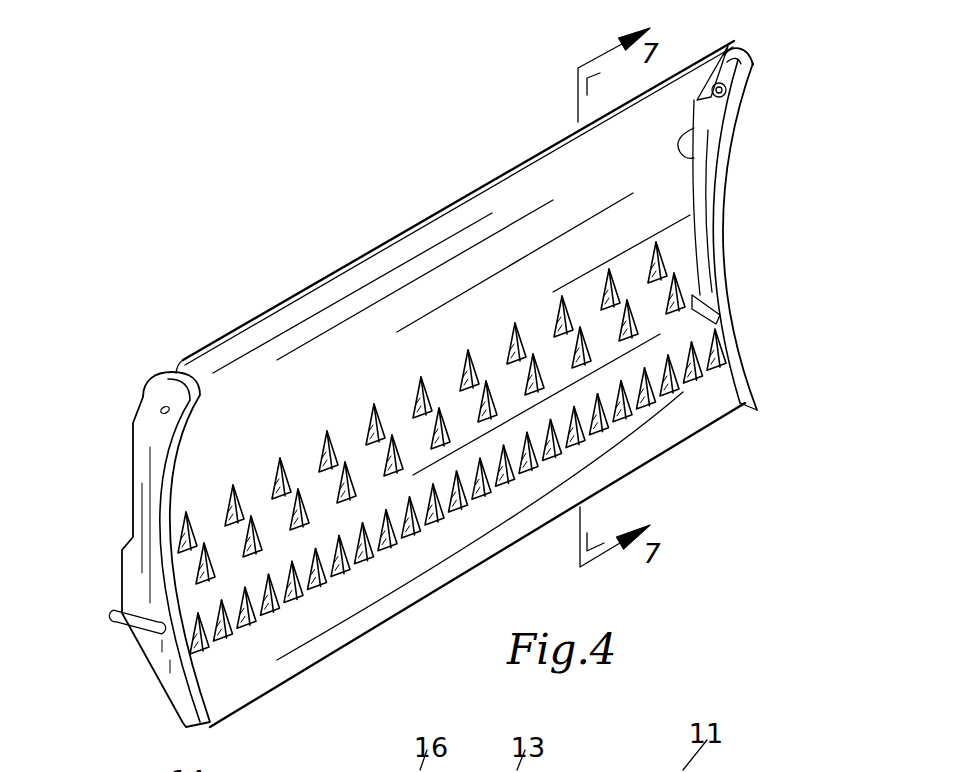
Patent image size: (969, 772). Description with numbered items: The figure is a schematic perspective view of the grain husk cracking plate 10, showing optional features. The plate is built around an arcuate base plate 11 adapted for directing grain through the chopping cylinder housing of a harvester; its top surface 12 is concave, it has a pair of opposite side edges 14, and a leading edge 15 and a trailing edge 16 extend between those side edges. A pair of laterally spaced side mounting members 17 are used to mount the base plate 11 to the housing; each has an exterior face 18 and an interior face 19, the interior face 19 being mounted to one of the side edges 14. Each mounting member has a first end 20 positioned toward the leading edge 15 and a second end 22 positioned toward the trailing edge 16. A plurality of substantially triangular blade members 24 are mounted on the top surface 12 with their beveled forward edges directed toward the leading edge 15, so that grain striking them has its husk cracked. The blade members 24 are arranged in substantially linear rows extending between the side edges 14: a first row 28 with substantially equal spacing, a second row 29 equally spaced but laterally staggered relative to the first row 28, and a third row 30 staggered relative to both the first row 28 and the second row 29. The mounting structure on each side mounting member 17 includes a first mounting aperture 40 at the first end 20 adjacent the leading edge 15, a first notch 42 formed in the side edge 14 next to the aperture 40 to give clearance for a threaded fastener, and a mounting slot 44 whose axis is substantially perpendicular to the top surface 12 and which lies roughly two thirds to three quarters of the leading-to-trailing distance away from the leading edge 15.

The grain husk cracking plate 10 is at (762, 224).
The base plate 11 is at (653, 435).
The top surface 12 is at (513, 517).
The side edges 14 is at (704, 157).
The leading edge 15 is at (345, 265).
The trailing edge 16 is at (270, 688).
The side mounting members 17 is at (143, 427).
The exterior face 18 is at (150, 460).
The interior face 19 is at (703, 187).
The first end 20 is at (737, 68).
The second end 22 is at (760, 403).
The blade members 24 is at (377, 488).
The first row 28 is at (207, 503).
The second row 29 is at (183, 573).
The third row 30 is at (238, 650).
The first mounting aperture 40 is at (727, 92).
The first notch 42 is at (706, 78).
The mounting slot 44 is at (723, 311).